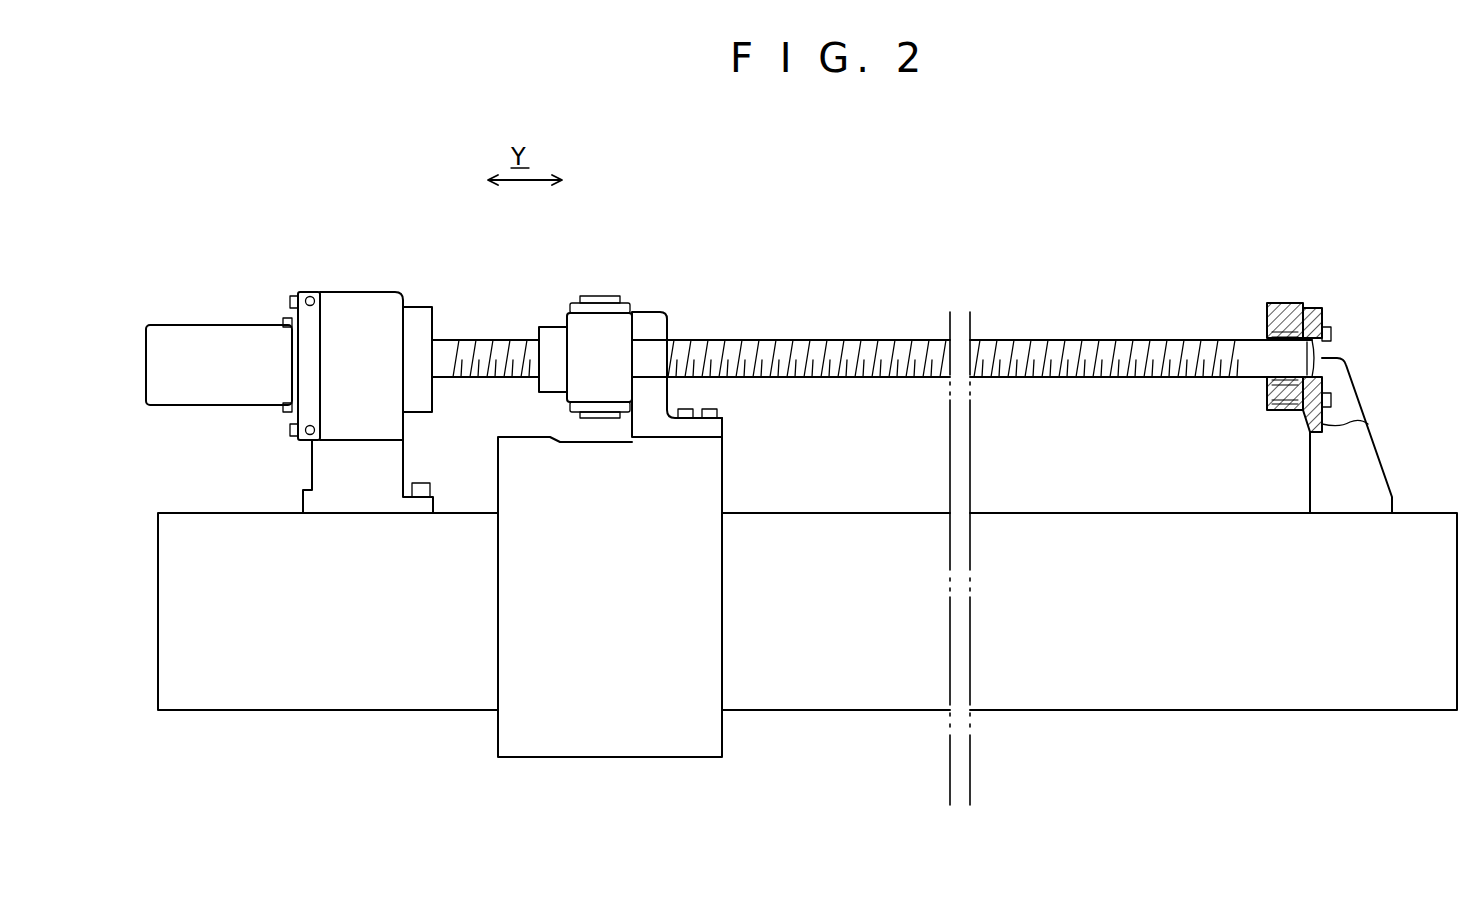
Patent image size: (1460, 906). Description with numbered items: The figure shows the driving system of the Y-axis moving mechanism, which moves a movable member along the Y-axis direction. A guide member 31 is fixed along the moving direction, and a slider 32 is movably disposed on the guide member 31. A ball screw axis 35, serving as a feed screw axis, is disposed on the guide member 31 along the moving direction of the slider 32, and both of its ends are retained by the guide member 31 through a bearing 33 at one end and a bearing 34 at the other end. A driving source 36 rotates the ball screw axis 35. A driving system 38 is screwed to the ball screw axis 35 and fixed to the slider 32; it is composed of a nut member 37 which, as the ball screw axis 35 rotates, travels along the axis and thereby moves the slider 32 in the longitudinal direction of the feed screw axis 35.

The guide member 31 is at (1126, 700).
The slider 32 is at (653, 740).
The bearing 33 is at (371, 302).
The bearing 34 is at (1267, 330).
The ball screw axis 35 is at (1088, 338).
The driving source 36 is at (197, 325).
The nut member 37 is at (613, 323).
The driving system 38 is at (978, 215).